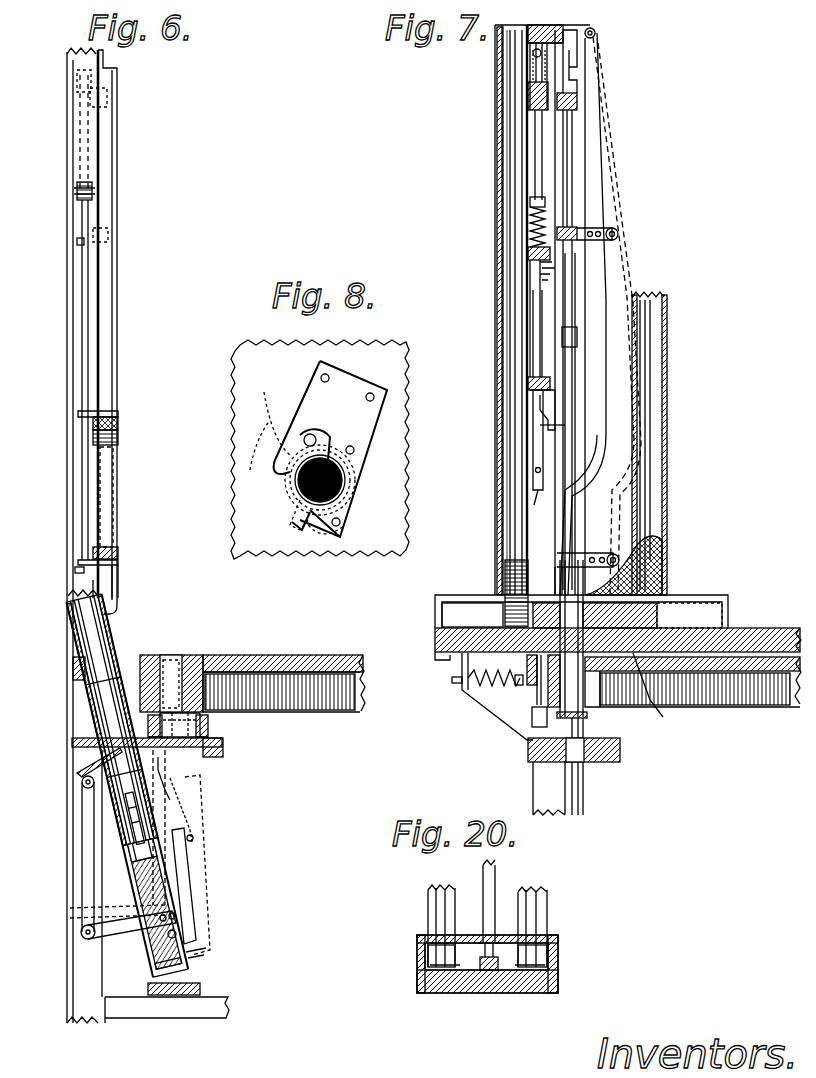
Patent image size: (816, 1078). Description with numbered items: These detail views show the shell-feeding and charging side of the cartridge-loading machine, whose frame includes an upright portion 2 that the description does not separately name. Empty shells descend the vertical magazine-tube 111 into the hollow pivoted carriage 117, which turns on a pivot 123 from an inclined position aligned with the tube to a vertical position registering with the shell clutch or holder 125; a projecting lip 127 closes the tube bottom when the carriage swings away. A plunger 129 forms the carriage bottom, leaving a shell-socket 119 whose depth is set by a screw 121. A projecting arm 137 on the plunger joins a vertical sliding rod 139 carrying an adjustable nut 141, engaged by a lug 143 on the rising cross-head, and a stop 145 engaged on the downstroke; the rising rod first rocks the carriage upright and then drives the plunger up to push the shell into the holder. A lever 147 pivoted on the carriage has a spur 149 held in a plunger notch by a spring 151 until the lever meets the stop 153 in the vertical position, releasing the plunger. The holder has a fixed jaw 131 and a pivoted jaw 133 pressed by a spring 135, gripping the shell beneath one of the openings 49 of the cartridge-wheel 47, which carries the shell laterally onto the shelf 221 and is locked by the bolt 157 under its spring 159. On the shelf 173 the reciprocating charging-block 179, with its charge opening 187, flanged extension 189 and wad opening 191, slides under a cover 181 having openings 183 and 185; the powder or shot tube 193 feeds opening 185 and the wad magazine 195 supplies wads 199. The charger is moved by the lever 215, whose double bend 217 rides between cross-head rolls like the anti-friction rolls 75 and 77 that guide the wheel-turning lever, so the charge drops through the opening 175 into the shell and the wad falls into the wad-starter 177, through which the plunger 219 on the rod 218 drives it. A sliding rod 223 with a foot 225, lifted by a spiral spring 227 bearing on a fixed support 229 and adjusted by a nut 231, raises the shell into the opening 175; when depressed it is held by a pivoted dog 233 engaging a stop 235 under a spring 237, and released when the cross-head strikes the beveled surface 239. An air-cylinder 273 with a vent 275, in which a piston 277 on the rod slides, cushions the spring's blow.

In FIG. 6, the post 2 is at (69, 278).
In FIG. 7, the post 2 is at (542, 310).
In FIG. 6, the cartridge-wheel 47 is at (212, 662).
In FIG. 7, the cartridge-wheel 47 is at (745, 700).
In FIG. 6, the openings 49 is at (172, 663).
In FIG. 7, the anti-friction roll 75 is at (577, 228).
In FIG. 7, the anti-friction roll 77 is at (618, 228).
In FIG. 6, the magazine 111 is at (112, 640).
In FIG. 6, the carriage 117 is at (200, 881).
In FIG. 6, the shell-socket 119 is at (140, 830).
In FIG. 6, the screw 121 is at (182, 820).
In FIG. 6, the pivot 123 is at (192, 930).
In FIG. 6, the shell clutch or holder 125 is at (210, 730).
In FIG. 8, the shell clutch or holder 125 is at (352, 385).
In FIG. 6, the projecting lip 127 is at (77, 773).
In FIG. 6, the plunger 129 is at (152, 873).
In FIG. 8, the fixed jaw 131 is at (350, 505).
In FIG. 6, the pivoted jaw 133 is at (180, 713).
In FIG. 8, the pivoted jaw 133 is at (285, 480).
In FIG. 8, the spring 135 is at (297, 413).
In FIG. 6, the projecting arm 137 is at (128, 930).
In FIG. 6, the vertical sliding rod 139 is at (87, 277).
In FIG. 6, the adjustable burr or nut 141 is at (93, 191).
In FIG. 6, the lug 143 is at (108, 236).
In FIG. 6, the stop or projection 145 is at (78, 563).
In FIG. 6, the lever 147 is at (198, 860).
In FIG. 6, the inturned point or spur 149 is at (200, 960).
In FIG. 6, the spring 151 is at (168, 788).
In FIG. 6, the stop 153 is at (223, 752).
In FIG. 7, the catch or bolt 157 is at (452, 683).
In FIG. 7, the spring 159 is at (490, 686).
In FIG. 7, the shelf 173 is at (762, 630).
In FIG. 20, the shelf 173 is at (492, 975).
In FIG. 7, the opening 175 is at (527, 668).
In FIG. 7, the wad-starter 177 is at (657, 692).
In FIG. 7, the charging-block 179 is at (660, 616).
In FIG. 20, the charging-block 179 is at (470, 963).
In FIG. 7, the cover 181 is at (690, 600).
In FIG. 7, the opening 183 is at (575, 592).
In FIG. 7, the opening 185 is at (618, 553).
In FIG. 7, the vertical opening 187 is at (575, 555).
In FIG. 7, the lateral flanged extension 189 is at (440, 640).
In FIG. 20, the lateral flanged extension 189 is at (433, 965).
In FIG. 7, the opening 191 is at (500, 618).
In FIG. 7, the tube 193 is at (652, 372).
In FIG. 7, the wad tube or magazine 195 is at (507, 520).
In FIG. 20, the wad tube or magazine 195 is at (432, 908).
In FIG. 7, the wads 199 is at (505, 580).
In FIG. 7, the arm or lever 215 is at (607, 290).
In FIG. 20, the arm or lever 215 is at (490, 892).
In FIG. 7, the double bend 217 is at (585, 468).
In FIG. 7, the rod 218 is at (578, 182).
In FIG. 7, the plunger 219 is at (600, 307).
In FIG. 6, the shelf 221 is at (72, 745).
In FIG. 8, the shelf 221 is at (275, 410).
In FIG. 7, the shelf 221 is at (620, 752).
In FIG. 7, the vertical sliding rod 223 is at (540, 327).
In FIG. 7, the foot 225 is at (585, 715).
In FIG. 7, the spiral spring 227 is at (532, 216).
In FIG. 7, the fixed support 229 is at (528, 253).
In FIG. 7, the nut 231 is at (530, 201).
In FIG. 7, the pivoted dog 233 is at (540, 414).
In FIG. 7, the stop 235 is at (530, 393).
In FIG. 7, the spring 237 is at (535, 440).
In FIG. 7, the beveled surface 239 is at (545, 420).
In FIG. 7, the air-cylinder 273 is at (532, 66).
In FIG. 7, the vent 275 is at (533, 53).
In FIG. 7, the piston 277 is at (528, 95).